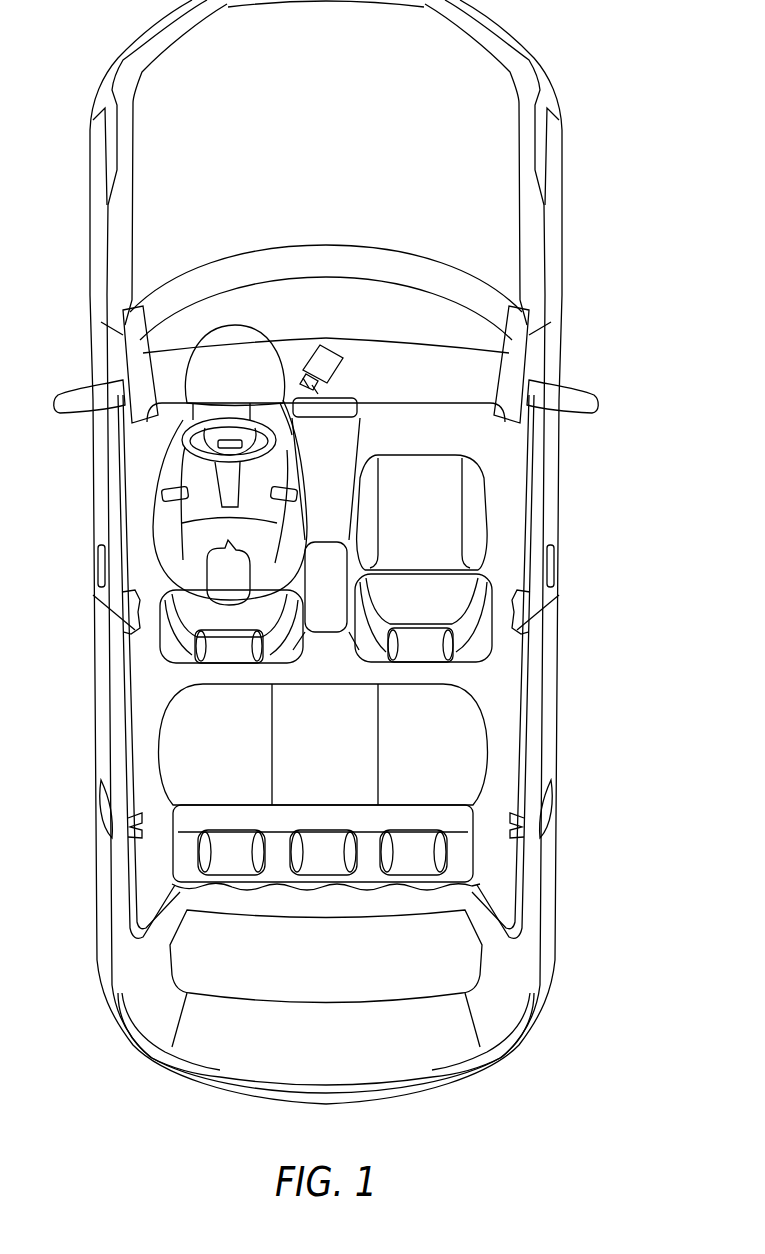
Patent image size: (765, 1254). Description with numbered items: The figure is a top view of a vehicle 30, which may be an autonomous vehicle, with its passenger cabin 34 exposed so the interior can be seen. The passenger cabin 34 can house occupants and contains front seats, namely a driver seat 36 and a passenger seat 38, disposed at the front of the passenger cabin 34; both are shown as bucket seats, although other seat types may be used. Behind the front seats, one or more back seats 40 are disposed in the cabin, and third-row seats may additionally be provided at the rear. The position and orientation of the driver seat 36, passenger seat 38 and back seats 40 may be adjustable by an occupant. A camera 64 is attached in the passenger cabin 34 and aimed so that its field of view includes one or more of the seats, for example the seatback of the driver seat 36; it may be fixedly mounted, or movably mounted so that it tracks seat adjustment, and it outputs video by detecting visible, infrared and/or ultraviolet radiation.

The vehicle 30 is at (624, 56).
The passenger cabin 34 is at (497, 673).
The driver seat 36 is at (167, 637).
The passenger seat 38 is at (490, 590).
The back seats 40 is at (490, 758).
The camera 64 is at (337, 377).